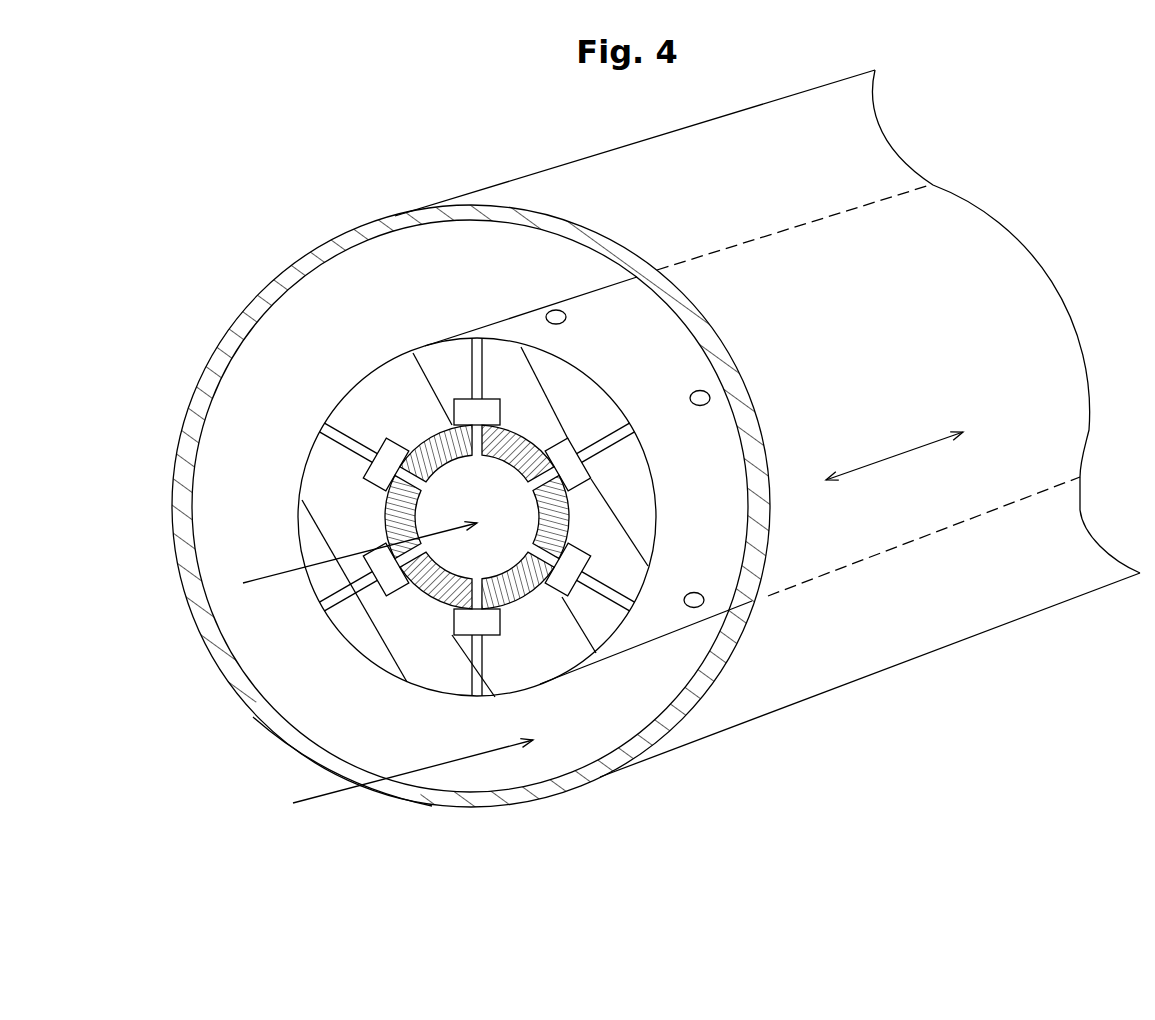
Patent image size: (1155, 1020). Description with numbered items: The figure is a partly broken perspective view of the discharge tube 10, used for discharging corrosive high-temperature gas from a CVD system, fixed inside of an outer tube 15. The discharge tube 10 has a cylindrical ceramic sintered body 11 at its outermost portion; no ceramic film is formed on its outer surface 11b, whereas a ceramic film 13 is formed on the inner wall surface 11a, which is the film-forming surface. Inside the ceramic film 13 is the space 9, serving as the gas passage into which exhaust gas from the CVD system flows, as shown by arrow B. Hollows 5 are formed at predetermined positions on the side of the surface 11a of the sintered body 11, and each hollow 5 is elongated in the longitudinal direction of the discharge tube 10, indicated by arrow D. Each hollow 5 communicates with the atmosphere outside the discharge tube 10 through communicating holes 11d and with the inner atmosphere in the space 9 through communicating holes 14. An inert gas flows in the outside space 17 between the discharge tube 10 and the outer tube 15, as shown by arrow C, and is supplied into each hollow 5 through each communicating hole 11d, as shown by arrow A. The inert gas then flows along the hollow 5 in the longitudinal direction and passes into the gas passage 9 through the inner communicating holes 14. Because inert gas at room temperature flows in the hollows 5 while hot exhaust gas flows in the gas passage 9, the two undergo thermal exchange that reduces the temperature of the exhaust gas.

The hollow 5 is at (470, 406).
The space 9 is at (484, 518).
The discharge tube 10 is at (399, 332).
The cylindrical ceramic sintered body 11 is at (488, 335).
The inner wall surface 11a is at (522, 432).
The outer surface 11b is at (668, 412).
The communicating hole 11d is at (613, 428).
The ceramic film 13 is at (535, 600).
The communicating hole 14 is at (464, 447).
The outer tube 15 is at (912, 650).
The outside space 17 is at (273, 382).
The arrow A is at (556, 312).
The arrow B is at (276, 581).
The arrow C is at (330, 796).
The arrow D is at (893, 455).